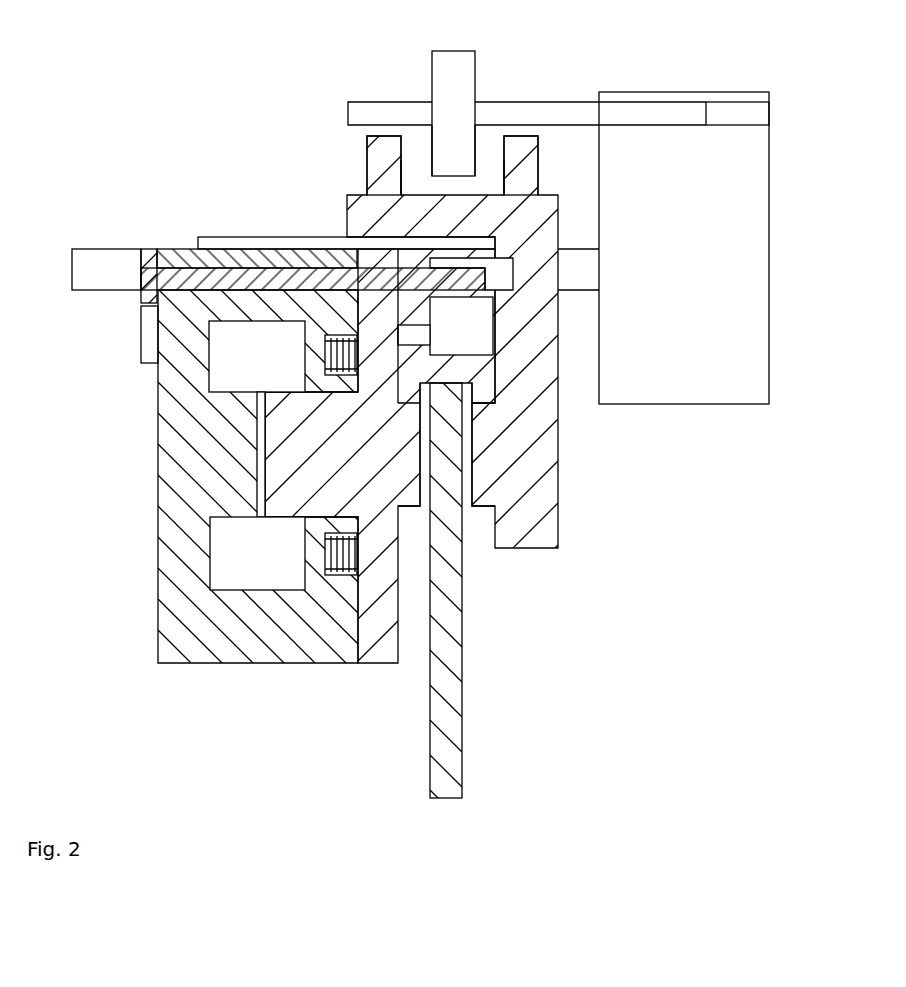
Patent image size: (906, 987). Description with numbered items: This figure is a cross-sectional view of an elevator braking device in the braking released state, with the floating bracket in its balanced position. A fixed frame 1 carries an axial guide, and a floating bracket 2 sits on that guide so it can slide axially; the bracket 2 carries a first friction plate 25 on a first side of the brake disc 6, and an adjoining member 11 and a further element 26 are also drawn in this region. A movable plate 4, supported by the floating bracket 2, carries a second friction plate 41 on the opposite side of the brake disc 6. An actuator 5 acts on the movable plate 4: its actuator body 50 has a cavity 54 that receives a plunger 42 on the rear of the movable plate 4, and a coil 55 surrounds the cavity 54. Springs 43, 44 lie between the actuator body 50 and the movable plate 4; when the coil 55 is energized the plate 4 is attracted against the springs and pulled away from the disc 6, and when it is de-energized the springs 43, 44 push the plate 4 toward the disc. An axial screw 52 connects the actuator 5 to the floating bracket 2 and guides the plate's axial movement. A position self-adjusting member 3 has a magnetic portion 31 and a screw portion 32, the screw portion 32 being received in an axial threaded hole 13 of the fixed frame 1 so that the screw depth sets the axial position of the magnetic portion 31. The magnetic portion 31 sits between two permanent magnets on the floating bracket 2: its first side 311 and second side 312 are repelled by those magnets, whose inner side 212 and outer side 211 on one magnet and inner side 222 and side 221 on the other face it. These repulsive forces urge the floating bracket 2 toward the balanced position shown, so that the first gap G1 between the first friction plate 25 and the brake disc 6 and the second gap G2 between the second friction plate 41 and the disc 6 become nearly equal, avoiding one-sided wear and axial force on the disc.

The fixed frame 1 is at (718, 253).
The floating bracket 2 is at (382, 227).
The position self-adjusting member 3 is at (380, 110).
The movable plate 4 is at (380, 617).
The actuator 5 is at (198, 497).
The brake disc 6 is at (455, 615).
The support rail 11 is at (133, 273).
The axial threaded hole 13 is at (716, 112).
The first friction plate 25 is at (480, 470).
The latch member 26 is at (498, 280).
The magnetic portion 31 is at (445, 72).
The screw portion 32 is at (598, 112).
The second friction plate 41 is at (417, 504).
The plunger 42 is at (318, 500).
The spring 43 is at (337, 578).
The spring 44 is at (327, 332).
The actuator body 50 is at (198, 525).
The axial screw 52 is at (162, 280).
The cavity 54 is at (253, 440).
The coil 55 is at (237, 357).
The outer side of first permanent magnet 211 is at (401, 178).
The inner side of first permanent magnet 212 is at (367, 165).
The second side wall 221 is at (514, 168).
The inner side of second permanent magnet 222 is at (513, 163).
The first side of magnetic portion 311 is at (466, 162).
The second side of magnetic portion 312 is at (437, 160).
The first gap G1 is at (467, 440).
The second gap G2 is at (424, 443).